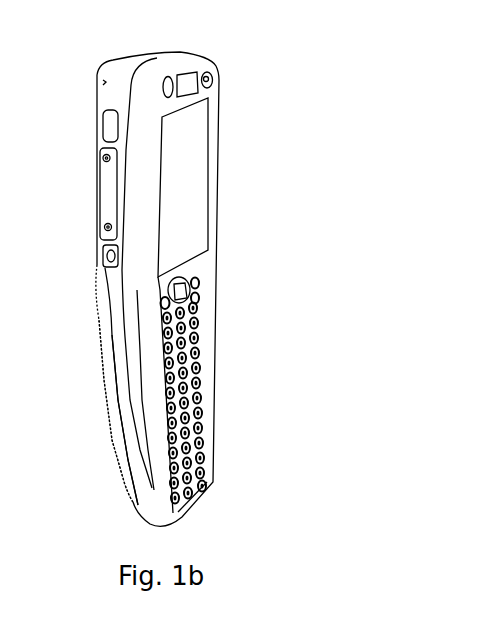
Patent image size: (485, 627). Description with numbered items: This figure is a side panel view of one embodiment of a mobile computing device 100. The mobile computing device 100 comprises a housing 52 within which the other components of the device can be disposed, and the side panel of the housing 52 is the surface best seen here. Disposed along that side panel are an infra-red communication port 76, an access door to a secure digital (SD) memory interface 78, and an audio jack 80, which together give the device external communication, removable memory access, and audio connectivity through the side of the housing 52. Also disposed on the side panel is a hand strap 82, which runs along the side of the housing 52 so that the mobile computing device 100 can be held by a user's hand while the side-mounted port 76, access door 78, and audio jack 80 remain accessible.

The mobile computing device 100 is at (228, 66).
The housing 52 is at (124, 66).
The infra-red communication port 76 is at (106, 122).
The access door to a secure digital (SD) memory interface 78 is at (108, 193).
The audio jack 80 is at (104, 259).
The hand strap 82 is at (108, 330).